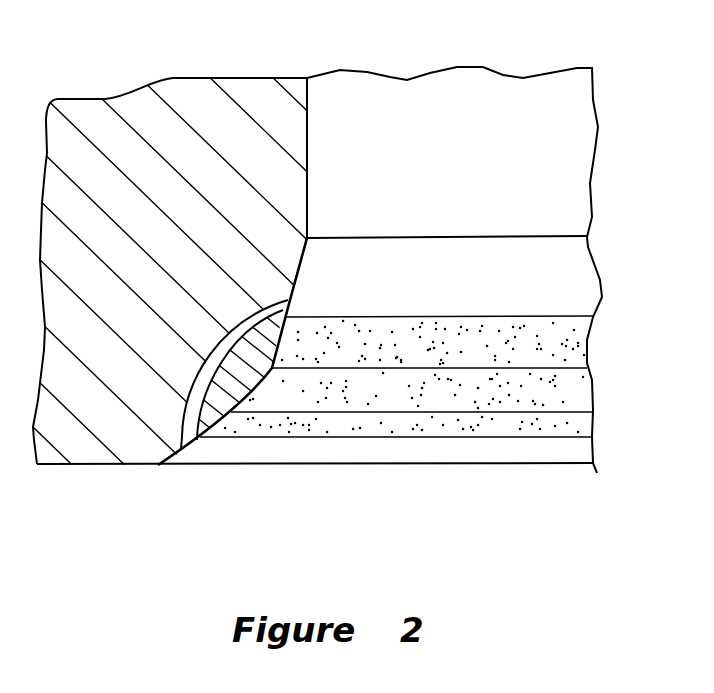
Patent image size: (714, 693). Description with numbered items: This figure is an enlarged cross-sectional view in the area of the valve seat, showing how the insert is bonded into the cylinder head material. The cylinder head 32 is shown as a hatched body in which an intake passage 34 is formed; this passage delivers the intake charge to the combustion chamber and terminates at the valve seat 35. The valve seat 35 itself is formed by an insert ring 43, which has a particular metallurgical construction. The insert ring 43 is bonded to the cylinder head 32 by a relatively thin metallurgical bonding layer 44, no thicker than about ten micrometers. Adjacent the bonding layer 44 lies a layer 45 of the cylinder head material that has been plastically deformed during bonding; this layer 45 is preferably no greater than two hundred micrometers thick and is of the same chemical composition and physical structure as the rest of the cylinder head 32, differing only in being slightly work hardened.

The cylinder head 32 is at (122, 138).
The intake passage 34 is at (380, 157).
The valve seat 35 is at (222, 431).
The insert ring 43 is at (246, 374).
The metallurgical bonding layer 44 is at (199, 433).
The plastically deformed layer 45 is at (185, 421).